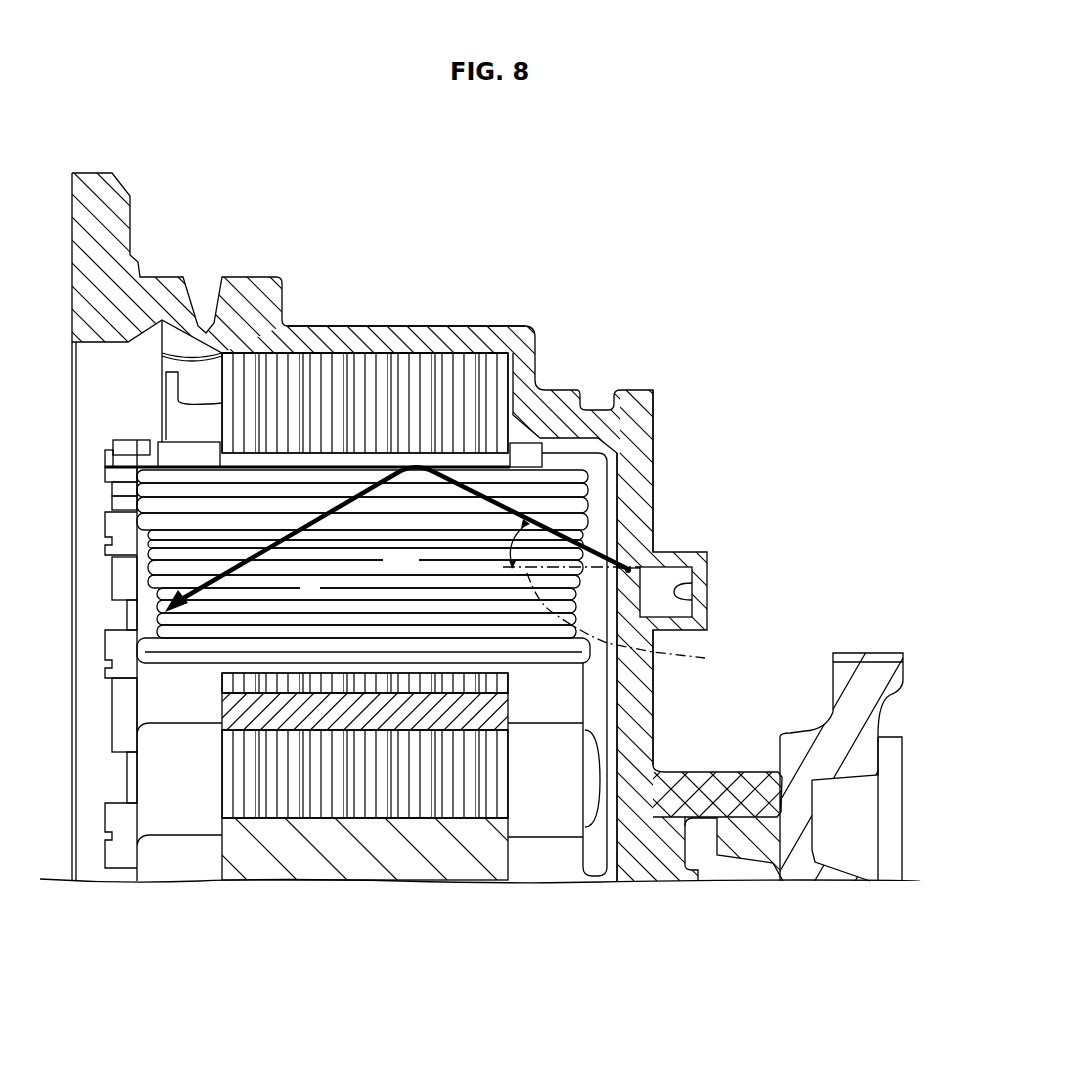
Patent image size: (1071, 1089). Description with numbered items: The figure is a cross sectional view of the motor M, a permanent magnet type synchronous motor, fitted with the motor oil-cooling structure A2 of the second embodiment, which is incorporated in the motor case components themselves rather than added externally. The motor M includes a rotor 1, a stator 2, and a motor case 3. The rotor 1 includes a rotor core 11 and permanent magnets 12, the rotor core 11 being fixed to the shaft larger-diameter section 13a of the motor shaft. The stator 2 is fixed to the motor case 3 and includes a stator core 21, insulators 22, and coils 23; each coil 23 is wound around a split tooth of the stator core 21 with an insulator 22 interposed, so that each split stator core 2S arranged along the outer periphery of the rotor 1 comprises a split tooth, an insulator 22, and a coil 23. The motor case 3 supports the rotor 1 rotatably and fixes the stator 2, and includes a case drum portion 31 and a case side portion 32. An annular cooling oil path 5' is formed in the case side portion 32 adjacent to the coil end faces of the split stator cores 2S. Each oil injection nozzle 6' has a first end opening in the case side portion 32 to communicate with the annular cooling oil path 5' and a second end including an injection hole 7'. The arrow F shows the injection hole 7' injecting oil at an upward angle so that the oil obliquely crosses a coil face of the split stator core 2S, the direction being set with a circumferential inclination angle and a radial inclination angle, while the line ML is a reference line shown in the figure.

The rotor 1 is at (460, 887).
The stator 2 is at (463, 350).
The stator core 21 is at (358, 410).
The insulator 22 is at (457, 460).
The coil 23 is at (247, 525).
The split stator core 2S is at (511, 563).
The motor case 3 is at (500, 325).
The case drum portion 31 is at (389, 348).
The case side portion 32 is at (637, 467).
The rotor core 11 is at (412, 778).
The permanent magnets 12 is at (343, 708).
The shaft larger-diameter section 13a is at (282, 852).
The annular cooling oil path 5' is at (707, 592).
The oil injection nozzle 6' is at (690, 549).
The injection hole 7' is at (662, 525).
The mold line ML is at (705, 658).
The arrow F is at (298, 527).
The motor M is at (259, 206).
The motor oil-cooling structure A2 is at (833, 510).